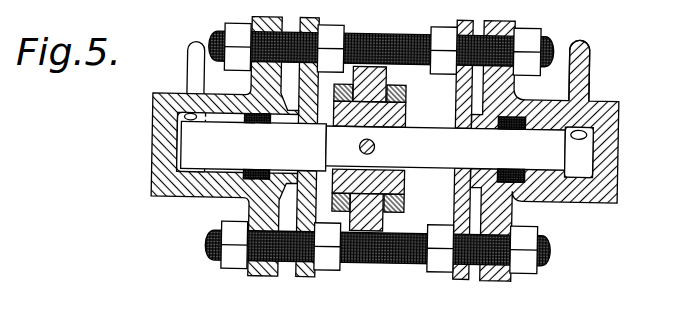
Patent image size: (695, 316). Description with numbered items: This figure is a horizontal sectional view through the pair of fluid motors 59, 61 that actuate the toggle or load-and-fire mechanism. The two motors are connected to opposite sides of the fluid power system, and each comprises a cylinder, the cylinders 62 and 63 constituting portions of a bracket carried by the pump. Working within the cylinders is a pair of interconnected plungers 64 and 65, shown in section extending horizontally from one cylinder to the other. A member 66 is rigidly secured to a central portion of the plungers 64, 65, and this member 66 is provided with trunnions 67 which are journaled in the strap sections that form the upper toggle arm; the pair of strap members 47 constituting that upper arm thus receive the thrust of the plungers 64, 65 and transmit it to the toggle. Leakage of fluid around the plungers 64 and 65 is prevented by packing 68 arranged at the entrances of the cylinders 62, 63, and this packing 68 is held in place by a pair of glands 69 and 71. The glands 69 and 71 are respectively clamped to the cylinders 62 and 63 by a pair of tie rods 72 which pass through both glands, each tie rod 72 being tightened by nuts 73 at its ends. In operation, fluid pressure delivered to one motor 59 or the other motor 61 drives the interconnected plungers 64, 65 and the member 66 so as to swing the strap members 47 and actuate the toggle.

The strap members 47 is at (406, 92).
The fluid motor 59 is at (177, 151).
The fluid motor 61 is at (591, 171).
The cylinder 62 is at (178, 134).
The cylinder 63 is at (585, 140).
The plunger 64 is at (254, 146).
The plunger 65 is at (446, 148).
The member 66 is at (406, 110).
The trunnions 67 is at (386, 75).
The packing 68 is at (245, 126).
The gland 69 is at (306, 19).
The gland 71 is at (458, 20).
The tie rods 72 is at (372, 34).
The nuts 73 is at (232, 29).